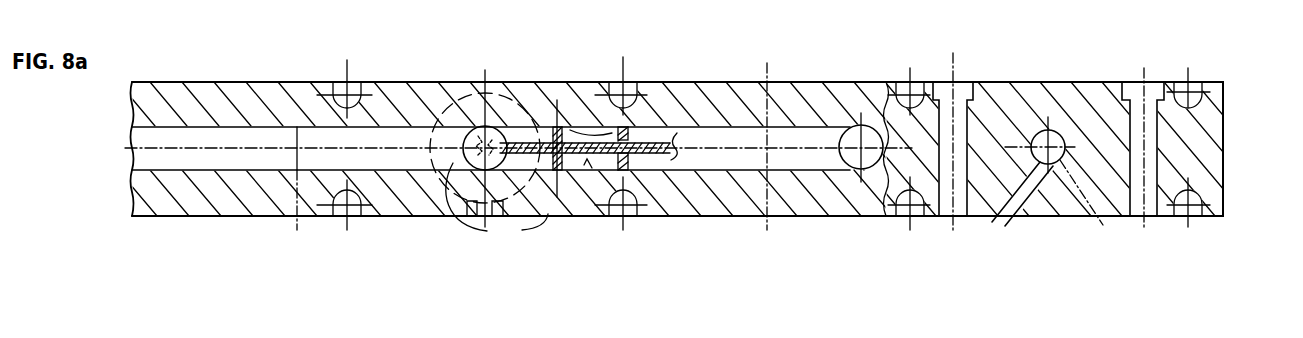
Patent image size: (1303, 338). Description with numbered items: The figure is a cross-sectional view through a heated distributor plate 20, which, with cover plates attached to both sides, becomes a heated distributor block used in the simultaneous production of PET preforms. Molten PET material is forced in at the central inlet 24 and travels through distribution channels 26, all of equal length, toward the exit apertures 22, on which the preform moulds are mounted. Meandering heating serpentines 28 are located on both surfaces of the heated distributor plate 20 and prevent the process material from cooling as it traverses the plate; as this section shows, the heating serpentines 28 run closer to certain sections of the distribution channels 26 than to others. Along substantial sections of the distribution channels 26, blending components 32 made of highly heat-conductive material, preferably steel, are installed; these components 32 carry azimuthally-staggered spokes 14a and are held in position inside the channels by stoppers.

The heated distributor plate 20 is at (417, 100).
The exit apertures 22 is at (962, 157).
The central inlet 24 is at (493, 125).
The distribution channels 26 is at (692, 137).
The heating serpentines 28 is at (352, 92).
The azimuthally-staggered spokes 14a is at (572, 132).
The components 32 is at (497, 204).